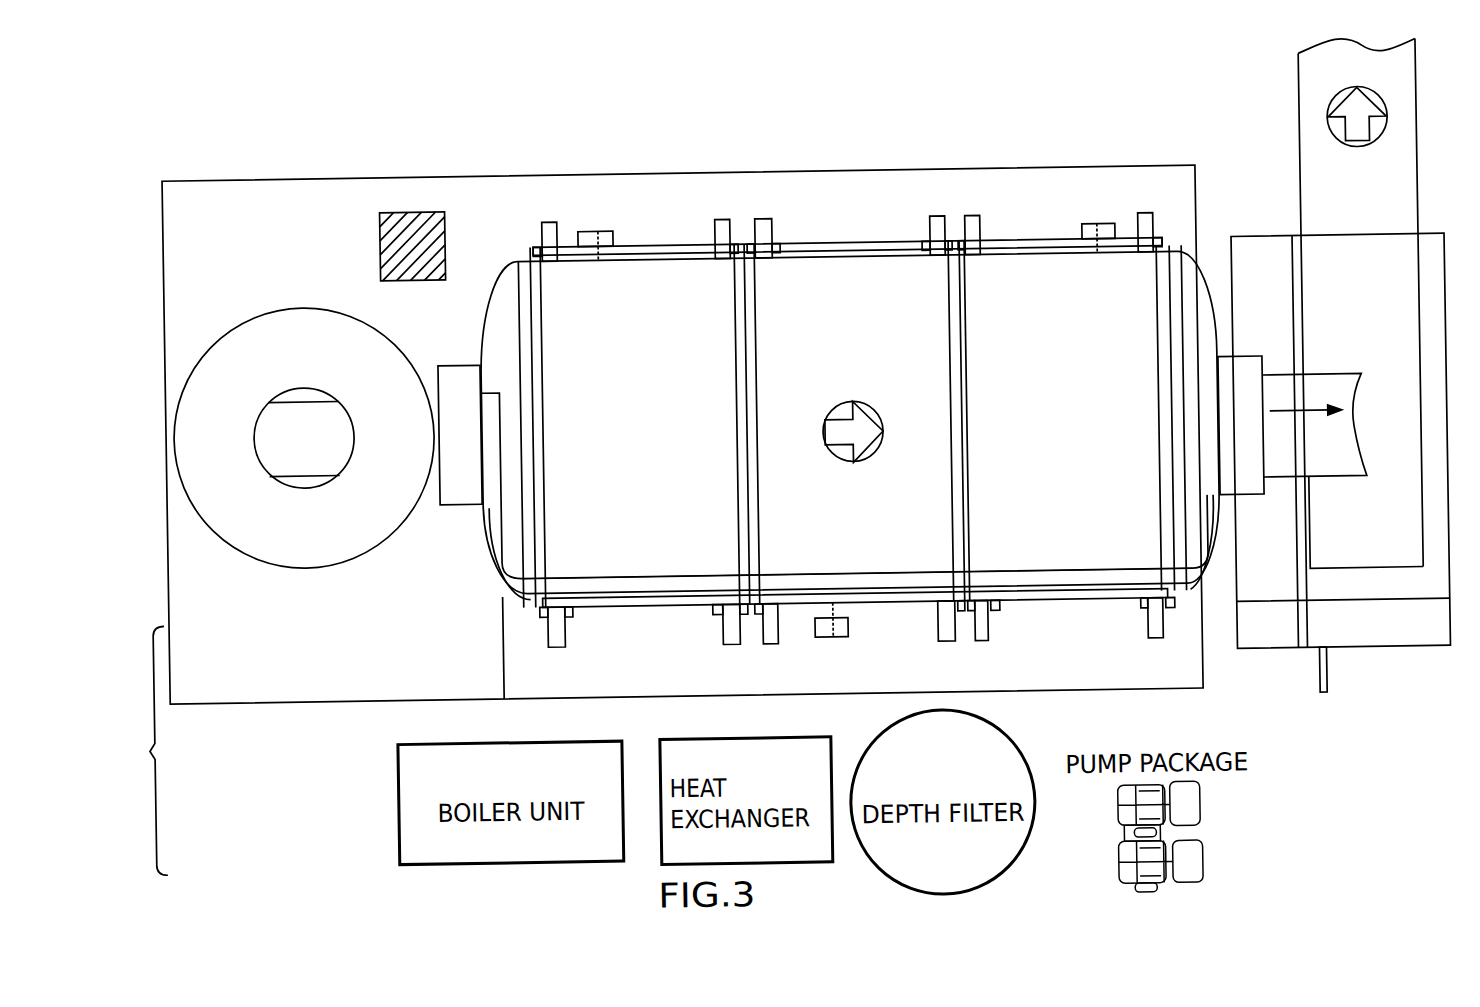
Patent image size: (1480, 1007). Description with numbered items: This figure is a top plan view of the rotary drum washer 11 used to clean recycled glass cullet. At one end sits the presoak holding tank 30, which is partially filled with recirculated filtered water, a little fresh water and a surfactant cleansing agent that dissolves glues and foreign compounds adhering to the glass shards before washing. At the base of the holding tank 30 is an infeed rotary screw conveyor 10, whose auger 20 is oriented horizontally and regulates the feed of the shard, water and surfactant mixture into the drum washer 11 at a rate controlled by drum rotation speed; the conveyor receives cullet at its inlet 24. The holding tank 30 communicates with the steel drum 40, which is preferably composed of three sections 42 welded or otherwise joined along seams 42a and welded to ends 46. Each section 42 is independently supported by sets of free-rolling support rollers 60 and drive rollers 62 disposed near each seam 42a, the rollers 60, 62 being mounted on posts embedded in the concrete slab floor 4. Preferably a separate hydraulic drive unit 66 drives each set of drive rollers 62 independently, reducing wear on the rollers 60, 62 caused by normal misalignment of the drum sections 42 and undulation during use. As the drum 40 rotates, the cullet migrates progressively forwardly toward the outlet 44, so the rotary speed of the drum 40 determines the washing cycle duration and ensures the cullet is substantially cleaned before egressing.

The concrete slab floor 4 is at (845, 175).
The infeed rotary screw conveyor 10 is at (1305, 143).
The rotary drum washer 11 is at (1033, 259).
The auger 20 is at (330, 441).
The inlet 24 is at (1443, 272).
The presoak holding tank 30 is at (252, 328).
The steel drum 40 is at (829, 268).
The drum sections 42 is at (617, 362).
The seams 42a is at (961, 479).
The outlet 44 is at (1322, 388).
The ends 46 is at (512, 437).
The free-rolling support rollers 60 is at (783, 229).
The drive rollers 62 is at (727, 231).
The hydraulic drive unit 66 is at (587, 245).